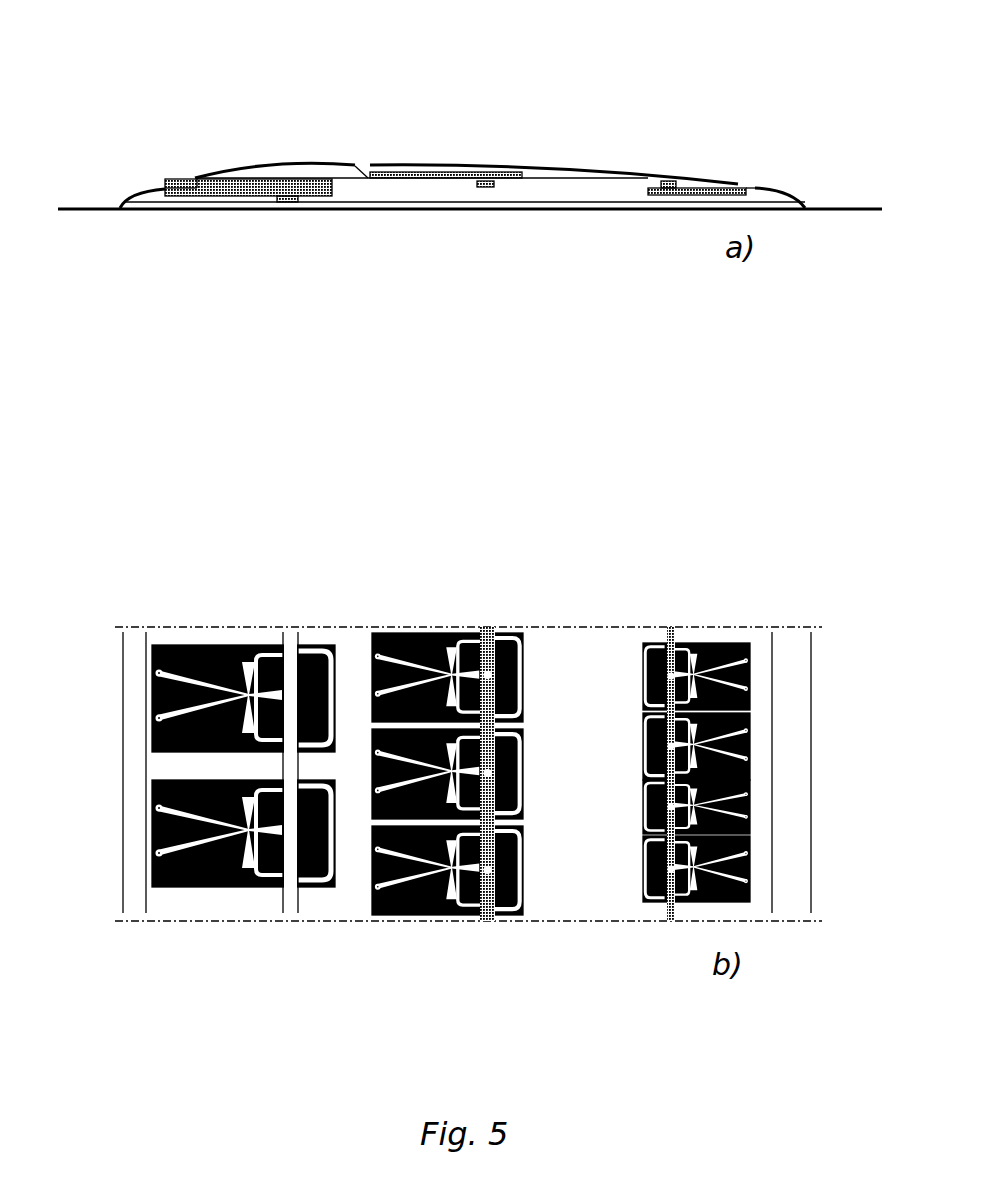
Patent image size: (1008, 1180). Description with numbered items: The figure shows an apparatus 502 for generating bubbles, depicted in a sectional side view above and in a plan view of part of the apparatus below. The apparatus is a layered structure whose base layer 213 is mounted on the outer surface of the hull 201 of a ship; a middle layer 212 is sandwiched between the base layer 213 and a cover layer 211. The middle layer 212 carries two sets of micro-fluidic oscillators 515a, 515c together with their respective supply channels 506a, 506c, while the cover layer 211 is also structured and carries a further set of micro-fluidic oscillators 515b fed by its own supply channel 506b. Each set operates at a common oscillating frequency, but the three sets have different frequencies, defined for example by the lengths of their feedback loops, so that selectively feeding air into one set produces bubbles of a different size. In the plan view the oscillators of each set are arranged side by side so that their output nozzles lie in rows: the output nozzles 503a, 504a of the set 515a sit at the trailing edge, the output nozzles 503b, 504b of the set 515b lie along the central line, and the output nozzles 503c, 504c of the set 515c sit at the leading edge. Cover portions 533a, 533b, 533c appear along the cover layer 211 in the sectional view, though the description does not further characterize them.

The hull 201 is at (470, 245).
The cover layer 211 is at (466, 123).
The middle layer 212 is at (465, 412).
The base layer 213 is at (500, 597).
The antenna module 502 is at (352, 96).
The output nozzle 503a is at (167, 735).
The output nozzle 503b is at (295, 1005).
The output nozzle 503c is at (750, 850).
The output nozzle 504a is at (106, 751).
The output nozzle 504b is at (418, 912).
The output nozzle 504c is at (748, 763).
The supply channel 506a is at (245, 514).
The supply channel 506b is at (464, 523).
The supply channel 506c is at (647, 495).
The set of micro-fluidic oscillators 515a is at (212, 563).
The set of micro-fluidic oscillators 515b is at (423, 633).
The set of micro-fluidic oscillators 515c is at (643, 1015).
The cover flap 533a is at (129, 150).
The cover step 533b is at (296, 126).
The cover flap 533c is at (787, 169).